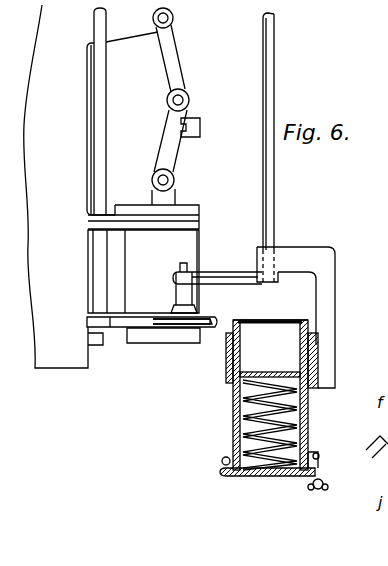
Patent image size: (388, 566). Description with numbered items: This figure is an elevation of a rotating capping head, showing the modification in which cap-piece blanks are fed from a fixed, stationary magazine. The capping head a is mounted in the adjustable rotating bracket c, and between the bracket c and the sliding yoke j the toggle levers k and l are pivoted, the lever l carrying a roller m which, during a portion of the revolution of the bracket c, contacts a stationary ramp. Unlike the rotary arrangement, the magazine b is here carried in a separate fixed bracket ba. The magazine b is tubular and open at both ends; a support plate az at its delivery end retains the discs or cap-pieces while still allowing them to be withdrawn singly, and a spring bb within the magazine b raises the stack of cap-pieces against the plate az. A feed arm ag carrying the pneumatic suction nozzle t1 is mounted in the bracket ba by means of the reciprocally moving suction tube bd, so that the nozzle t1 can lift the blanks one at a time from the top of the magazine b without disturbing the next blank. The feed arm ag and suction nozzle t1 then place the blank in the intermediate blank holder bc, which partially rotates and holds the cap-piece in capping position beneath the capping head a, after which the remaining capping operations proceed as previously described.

The rotating bracket c is at (91, 186).
The toggle lever k is at (173, 58).
The toggle lever l is at (170, 160).
The roller m is at (199, 127).
The sliding yoke j is at (172, 202).
The capping head a is at (152, 286).
The suction nozzle t1 is at (172, 318).
The feed arm ag is at (221, 276).
The intermediate blank holder bc is at (213, 318).
The suction tube bd is at (264, 159).
The fixed bracket ba is at (317, 293).
The magazine b is at (270, 388).
The support plate az is at (303, 319).
The spring bb is at (245, 399).